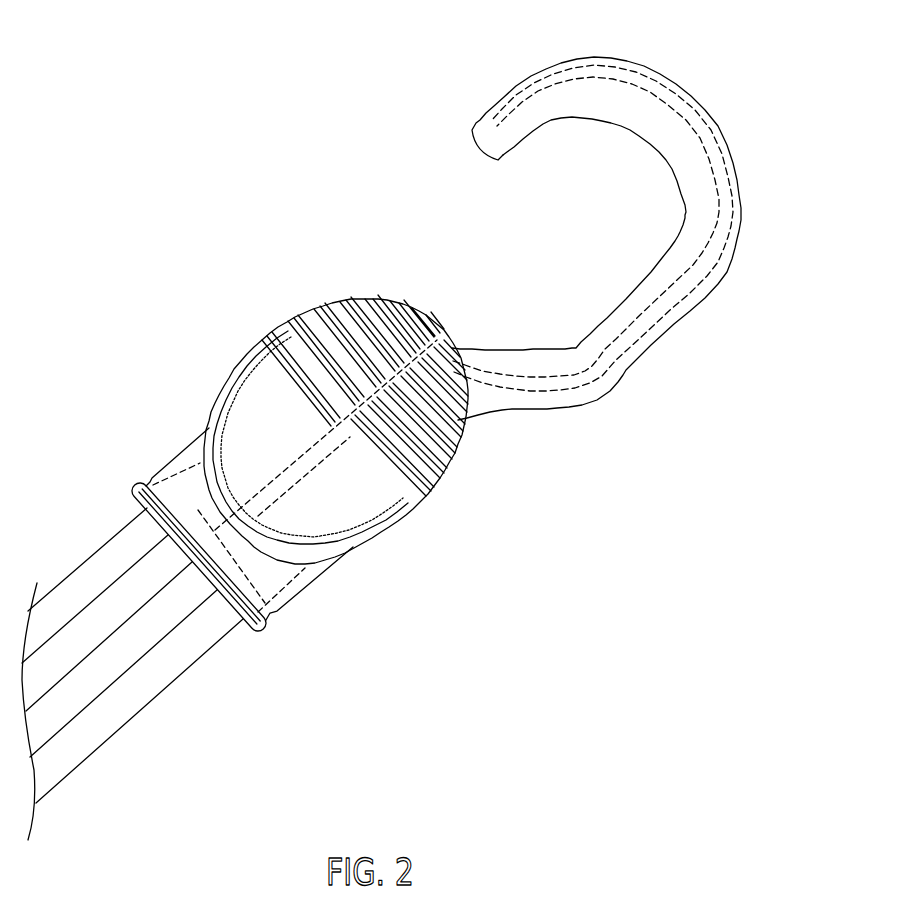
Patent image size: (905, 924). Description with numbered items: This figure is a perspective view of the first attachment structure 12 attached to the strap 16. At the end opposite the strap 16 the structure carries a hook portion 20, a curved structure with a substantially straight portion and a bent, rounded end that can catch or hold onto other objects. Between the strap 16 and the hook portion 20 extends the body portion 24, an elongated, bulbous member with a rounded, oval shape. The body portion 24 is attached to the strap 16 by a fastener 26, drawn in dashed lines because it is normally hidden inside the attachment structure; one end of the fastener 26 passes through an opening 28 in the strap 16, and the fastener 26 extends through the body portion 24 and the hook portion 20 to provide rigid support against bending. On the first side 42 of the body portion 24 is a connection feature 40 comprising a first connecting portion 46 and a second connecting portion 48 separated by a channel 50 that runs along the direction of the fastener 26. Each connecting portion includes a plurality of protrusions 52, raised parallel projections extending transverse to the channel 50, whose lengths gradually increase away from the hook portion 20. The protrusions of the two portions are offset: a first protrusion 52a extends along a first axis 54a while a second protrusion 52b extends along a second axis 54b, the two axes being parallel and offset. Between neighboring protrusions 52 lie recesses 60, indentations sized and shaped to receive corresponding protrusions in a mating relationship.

The first attachment structure 12 is at (166, 73).
The strap 16 is at (148, 705).
The hook portion 20 is at (513, 85).
The body portion 24 is at (250, 366).
The fastener 26 is at (294, 483).
The opening 28 is at (194, 507).
The connection feature 40 is at (373, 282).
The first side 42 is at (241, 418).
The first connecting portion 46 is at (287, 389).
The second connecting portion 48 is at (367, 468).
The channel 50 is at (338, 428).
The protrusions 52 is at (425, 323).
The first protrusion 52a is at (316, 405).
The second protrusion 52b is at (437, 496).
The first axis 54a is at (350, 433).
The second axis 54b is at (272, 326).
The recesses 60 is at (350, 306).